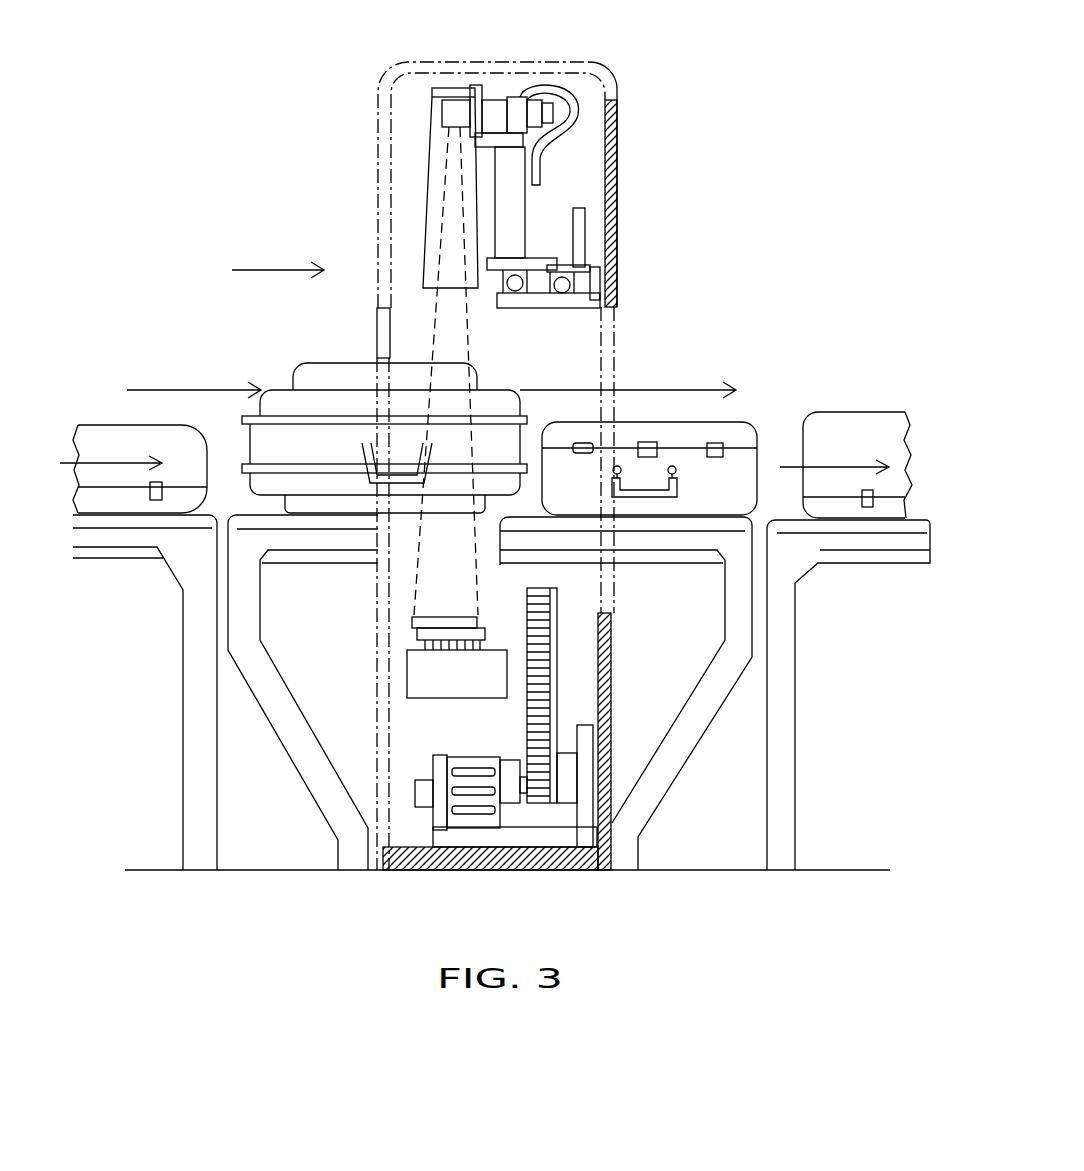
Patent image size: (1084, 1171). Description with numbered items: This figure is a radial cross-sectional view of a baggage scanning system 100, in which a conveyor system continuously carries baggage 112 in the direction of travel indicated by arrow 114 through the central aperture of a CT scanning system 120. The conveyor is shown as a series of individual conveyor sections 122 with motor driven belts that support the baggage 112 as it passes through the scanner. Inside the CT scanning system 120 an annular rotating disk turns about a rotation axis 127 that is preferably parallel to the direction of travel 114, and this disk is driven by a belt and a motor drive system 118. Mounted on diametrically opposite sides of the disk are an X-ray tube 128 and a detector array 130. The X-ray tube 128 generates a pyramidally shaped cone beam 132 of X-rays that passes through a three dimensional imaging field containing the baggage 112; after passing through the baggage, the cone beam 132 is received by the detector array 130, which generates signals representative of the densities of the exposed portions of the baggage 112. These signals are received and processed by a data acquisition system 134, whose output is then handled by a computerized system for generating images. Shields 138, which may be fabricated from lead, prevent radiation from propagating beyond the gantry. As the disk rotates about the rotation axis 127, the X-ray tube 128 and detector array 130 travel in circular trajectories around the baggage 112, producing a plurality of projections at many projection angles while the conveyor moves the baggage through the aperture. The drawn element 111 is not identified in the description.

The baggage scanning system 100 is at (783, 927).
The lift screw / rack 111 is at (557, 688).
The baggage 112 is at (337, 362).
The direction of travel 114 is at (273, 270).
The motor drive system 118 is at (497, 827).
The CT scanning system 120 is at (457, 60).
The conveyor sections 122 is at (797, 685).
The rotation axis 127 is at (178, 388).
The X-ray tube 128 is at (503, 100).
The detector array 130 is at (437, 615).
The cone beam 132 is at (467, 362).
The data acquisition system 134 is at (412, 700).
The shields 138 is at (410, 632).